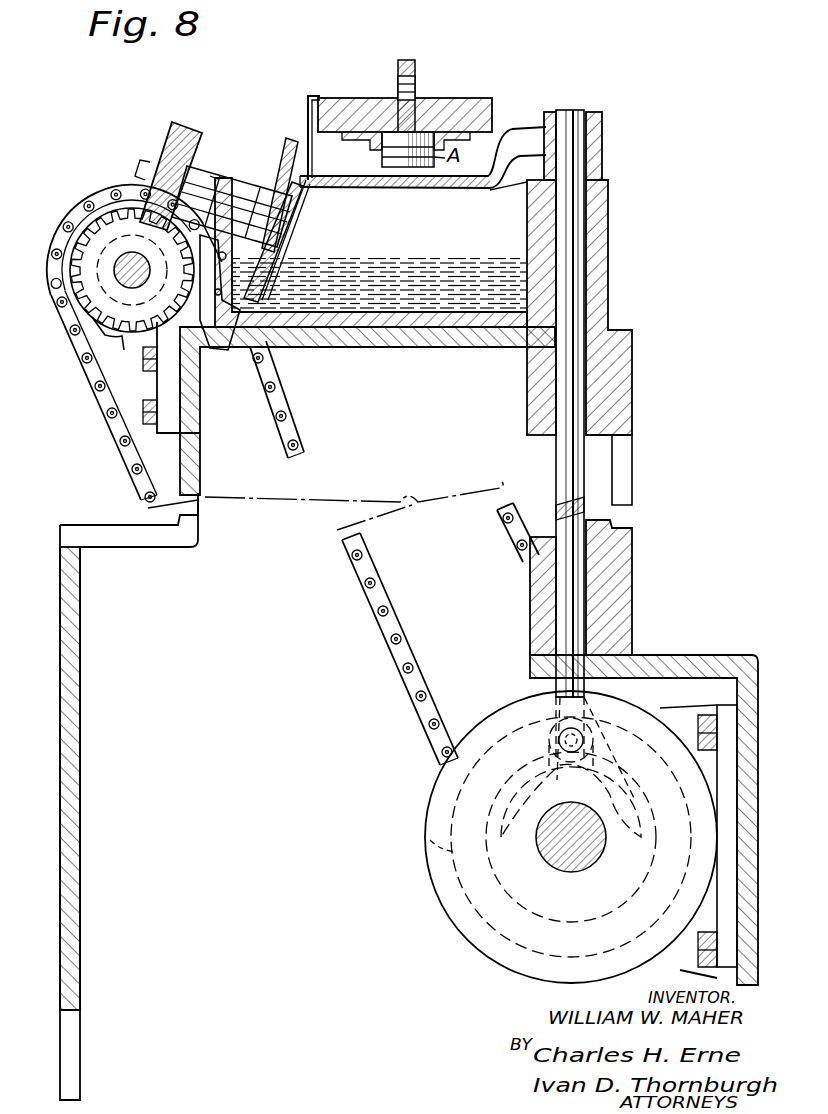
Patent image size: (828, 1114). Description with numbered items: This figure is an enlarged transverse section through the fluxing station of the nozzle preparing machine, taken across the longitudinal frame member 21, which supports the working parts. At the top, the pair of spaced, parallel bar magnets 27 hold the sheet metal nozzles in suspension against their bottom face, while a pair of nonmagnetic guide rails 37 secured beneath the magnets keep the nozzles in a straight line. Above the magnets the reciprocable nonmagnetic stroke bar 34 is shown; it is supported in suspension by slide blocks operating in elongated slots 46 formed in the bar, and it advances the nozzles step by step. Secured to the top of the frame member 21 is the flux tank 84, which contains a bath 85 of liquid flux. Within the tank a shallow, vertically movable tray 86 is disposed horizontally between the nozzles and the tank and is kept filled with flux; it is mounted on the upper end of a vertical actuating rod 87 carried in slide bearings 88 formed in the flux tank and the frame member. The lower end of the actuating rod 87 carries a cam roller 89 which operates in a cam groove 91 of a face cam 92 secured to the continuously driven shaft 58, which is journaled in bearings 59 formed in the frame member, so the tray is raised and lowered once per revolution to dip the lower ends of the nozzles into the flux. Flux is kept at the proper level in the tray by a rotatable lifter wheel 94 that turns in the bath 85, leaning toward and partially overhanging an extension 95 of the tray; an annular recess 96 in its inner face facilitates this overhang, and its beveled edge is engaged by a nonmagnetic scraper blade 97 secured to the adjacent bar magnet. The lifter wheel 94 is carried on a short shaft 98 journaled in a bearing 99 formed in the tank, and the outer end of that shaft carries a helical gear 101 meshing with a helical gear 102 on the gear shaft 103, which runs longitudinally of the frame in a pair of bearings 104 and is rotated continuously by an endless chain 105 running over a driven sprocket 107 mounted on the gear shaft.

The longitudinal frame member 21 is at (628, 470).
The bar magnets 27 is at (376, 100).
The stroke bar 34 is at (410, 62).
The guide rails 37 is at (362, 145).
The elongated slots 46 is at (418, 81).
The driven shaft 58 is at (562, 862).
The bearings 59 is at (678, 724).
The flux tank 84 is at (456, 330).
The bath of liquid flux 85 is at (390, 262).
The tray 86 is at (445, 190).
The actuating rod 87 is at (580, 208).
The slide bearings 88 is at (600, 258).
The cam roller 89 is at (550, 741).
The cam groove 91 is at (455, 853).
The face cam 92 is at (437, 888).
The lifter wheel 94 is at (294, 142).
The extension 95 is at (306, 188).
The annular recess 96 is at (298, 210).
The scraper blade 97 is at (307, 115).
The short shaft 98 is at (282, 226).
The bearing 99 is at (242, 190).
The helical gear 101 is at (180, 130).
The helical gear 102 is at (104, 238).
The gear shaft 103 is at (127, 268).
The bearings 104 is at (136, 358).
The endless chain 105 is at (104, 402).
The driven sprocket 107 is at (90, 326).